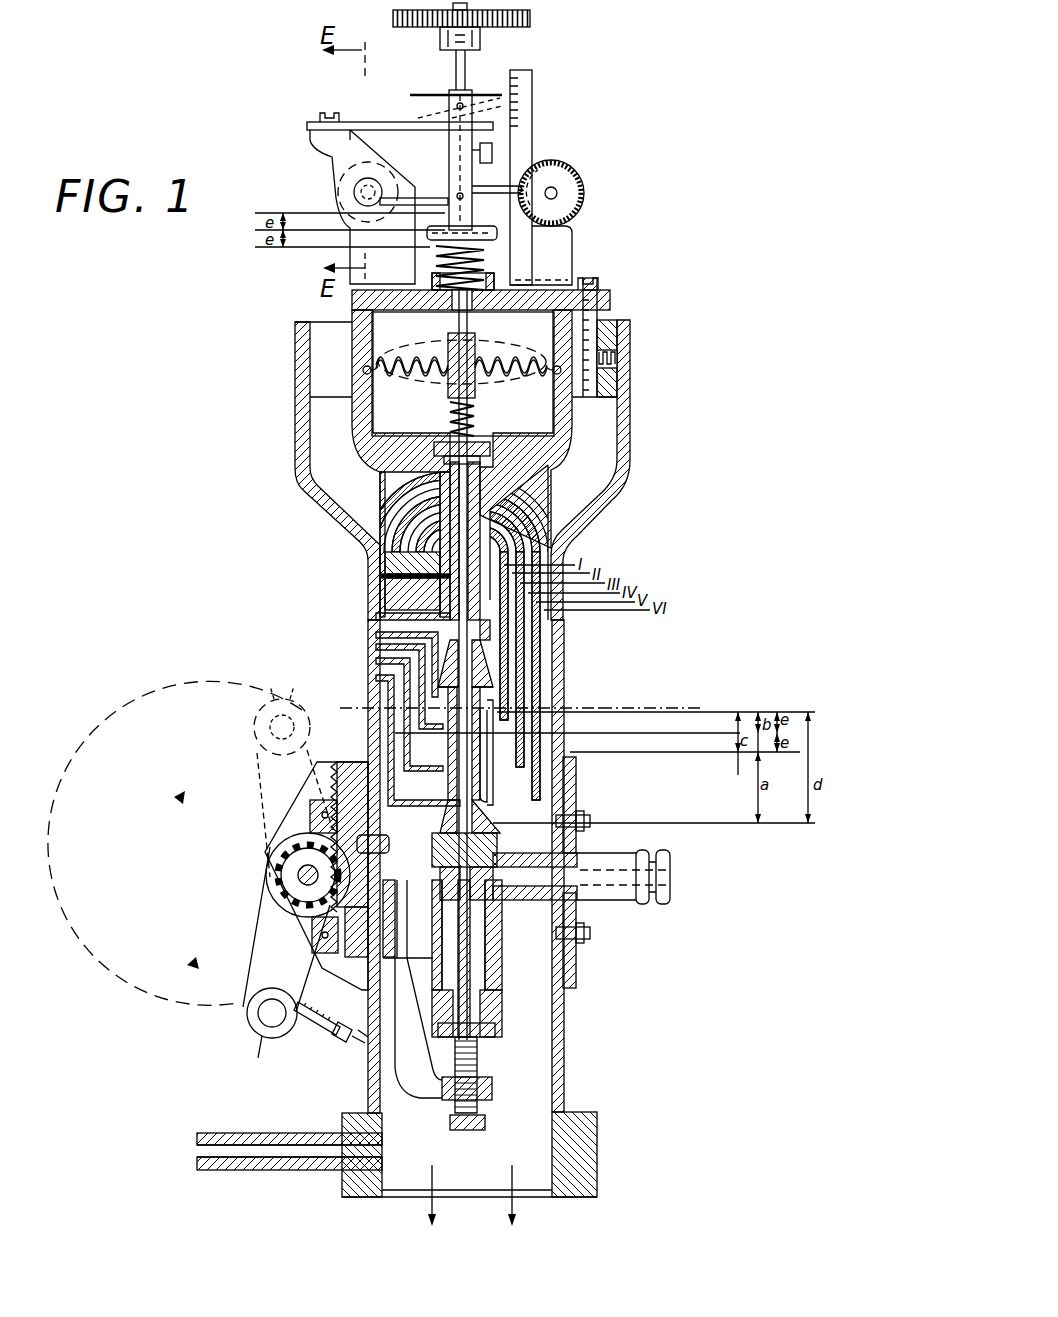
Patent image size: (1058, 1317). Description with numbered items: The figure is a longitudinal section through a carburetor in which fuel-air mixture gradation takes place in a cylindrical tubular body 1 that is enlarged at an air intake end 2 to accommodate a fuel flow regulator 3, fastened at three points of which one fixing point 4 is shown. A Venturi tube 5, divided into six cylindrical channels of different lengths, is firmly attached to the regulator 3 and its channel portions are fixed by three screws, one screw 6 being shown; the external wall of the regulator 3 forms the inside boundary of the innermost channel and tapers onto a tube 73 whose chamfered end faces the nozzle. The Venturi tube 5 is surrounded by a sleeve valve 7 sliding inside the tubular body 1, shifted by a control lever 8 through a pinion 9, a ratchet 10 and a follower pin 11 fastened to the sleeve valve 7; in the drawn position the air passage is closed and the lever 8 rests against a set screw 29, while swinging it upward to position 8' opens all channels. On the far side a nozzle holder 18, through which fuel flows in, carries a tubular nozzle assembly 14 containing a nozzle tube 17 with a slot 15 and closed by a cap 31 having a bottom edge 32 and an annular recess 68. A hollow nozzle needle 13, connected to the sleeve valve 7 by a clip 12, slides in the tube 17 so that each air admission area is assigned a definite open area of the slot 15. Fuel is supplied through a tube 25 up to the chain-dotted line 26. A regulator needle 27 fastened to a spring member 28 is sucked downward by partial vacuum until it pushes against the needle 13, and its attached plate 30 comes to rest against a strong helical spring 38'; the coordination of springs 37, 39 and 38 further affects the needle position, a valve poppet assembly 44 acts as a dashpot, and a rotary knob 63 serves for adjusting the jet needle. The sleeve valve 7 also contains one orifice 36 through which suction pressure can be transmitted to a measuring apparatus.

The cylindrical tubular body 1 is at (560, 655).
The enlarged air intake end 2 is at (603, 460).
The fuel flow regulator 3 is at (537, 330).
The fixing point 4 is at (613, 388).
The Venturi tube 5 is at (382, 496).
The screw 6 is at (395, 570).
The sleeve valve 7 is at (380, 511).
The control lever 8 is at (274, 945).
The control lever upper position 8' is at (190, 843).
The pinion 9 is at (293, 893).
The ratchet 10 is at (353, 800).
The follower pin 11 is at (378, 850).
The clip 12 is at (422, 1100).
The hollow nozzle needle 13 is at (470, 1005).
The tubular nozzle assembly 14 is at (438, 748).
The slot 15 is at (453, 721).
The nozzle tube 17 is at (477, 783).
The nozzle holder 18 is at (490, 937).
The tube 25 is at (650, 900).
The chain-dotted line 26 is at (652, 703).
The regulator needle 27 is at (463, 498).
The spring member 28 is at (530, 380).
The set screw 29 is at (323, 1027).
The plate 30 is at (498, 232).
The cap 31 is at (440, 668).
The bottom edge of cap 32 is at (498, 686).
The orifice 36 is at (375, 617).
The spring 37 is at (533, 157).
The spring 38 is at (393, 184).
The helical spring 38' is at (495, 268).
The bimetal spring 39 is at (416, 112).
The valve poppet assembly 44 is at (434, 450).
The rotary knob 63 is at (528, 18).
The annular recess 68 is at (477, 628).
The tube 73 is at (392, 606).